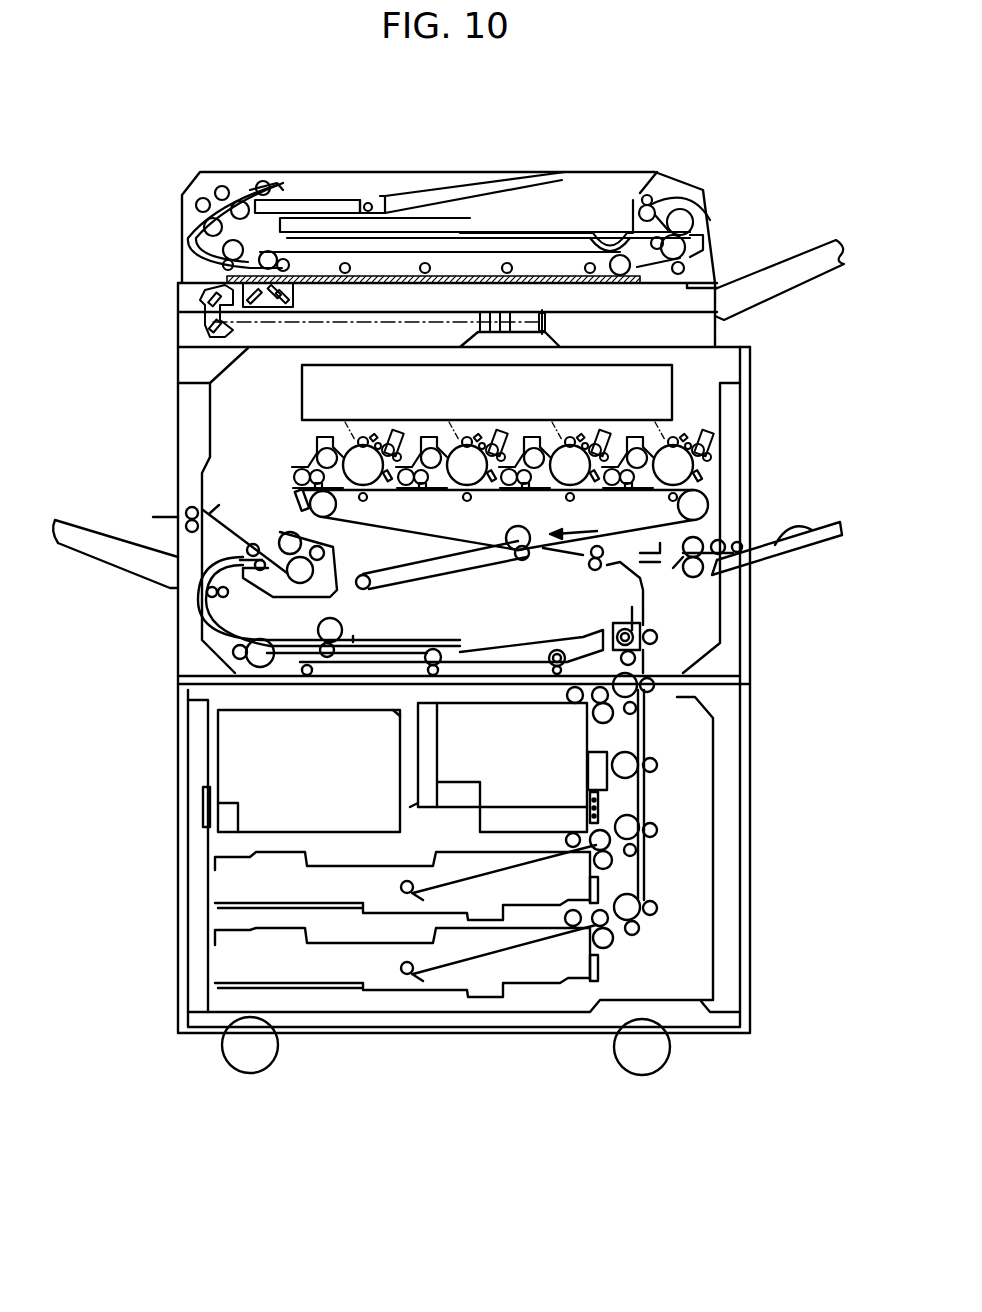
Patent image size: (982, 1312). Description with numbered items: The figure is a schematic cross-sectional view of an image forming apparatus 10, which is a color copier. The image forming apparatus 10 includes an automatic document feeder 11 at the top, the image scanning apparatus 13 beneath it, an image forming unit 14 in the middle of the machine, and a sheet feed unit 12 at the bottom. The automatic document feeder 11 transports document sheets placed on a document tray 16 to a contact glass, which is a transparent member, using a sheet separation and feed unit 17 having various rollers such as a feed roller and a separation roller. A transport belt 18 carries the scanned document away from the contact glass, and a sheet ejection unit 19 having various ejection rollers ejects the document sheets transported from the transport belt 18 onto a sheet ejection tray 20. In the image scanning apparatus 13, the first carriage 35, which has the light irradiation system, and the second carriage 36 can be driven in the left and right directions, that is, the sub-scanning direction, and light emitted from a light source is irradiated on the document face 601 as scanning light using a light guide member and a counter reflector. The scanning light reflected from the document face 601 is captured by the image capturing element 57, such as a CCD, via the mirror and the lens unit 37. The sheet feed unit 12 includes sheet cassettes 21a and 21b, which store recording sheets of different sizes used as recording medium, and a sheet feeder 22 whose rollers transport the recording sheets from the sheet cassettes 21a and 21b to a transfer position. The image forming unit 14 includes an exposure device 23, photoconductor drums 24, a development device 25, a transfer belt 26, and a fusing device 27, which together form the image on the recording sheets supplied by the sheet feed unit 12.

The image forming apparatus 10 is at (601, 140).
The automatic document feeder 11 is at (174, 221).
The sheet feed unit 12 is at (171, 845).
The image scanning apparatus 13 is at (173, 317).
The image forming unit 14 is at (169, 600).
The document tray 16 is at (408, 190).
The sheet separation and feed unit 17 is at (208, 190).
The transport belt 18 is at (469, 252).
The sheet ejection unit 19 is at (701, 228).
The sheet ejection tray 20 is at (587, 232).
The sheet cassette 21a is at (237, 908).
The sheet cassette 21b is at (310, 988).
The sheet feeder 22 is at (650, 808).
The exposure device 23 is at (302, 392).
The photoconductor drums 24 is at (683, 474).
The development device 25 is at (697, 434).
The transfer belt 26 is at (415, 532).
The fusing device 27 is at (266, 528).
The first carriage 35 is at (295, 285).
The second carriage 36 is at (238, 329).
The lens unit 37 is at (473, 323).
The image capturing element 57 is at (556, 323).
The document face 601 is at (540, 275).